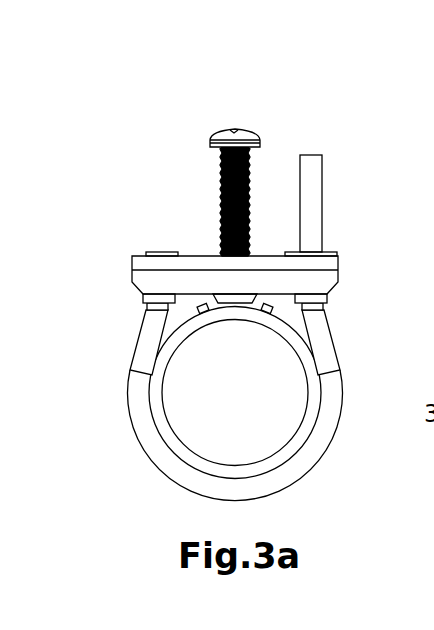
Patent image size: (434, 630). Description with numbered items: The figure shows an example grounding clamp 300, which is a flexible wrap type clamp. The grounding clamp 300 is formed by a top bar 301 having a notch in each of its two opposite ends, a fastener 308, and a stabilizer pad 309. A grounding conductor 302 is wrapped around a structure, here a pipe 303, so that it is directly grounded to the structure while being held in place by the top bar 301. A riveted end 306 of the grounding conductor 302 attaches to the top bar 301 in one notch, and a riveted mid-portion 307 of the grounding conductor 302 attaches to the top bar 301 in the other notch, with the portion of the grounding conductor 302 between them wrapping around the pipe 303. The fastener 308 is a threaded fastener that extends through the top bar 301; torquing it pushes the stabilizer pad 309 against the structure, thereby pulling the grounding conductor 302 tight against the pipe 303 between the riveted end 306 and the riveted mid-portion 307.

The grounding clamp 300 is at (291, 92).
The top bar 301 is at (200, 253).
The grounding conductor 302 is at (130, 373).
The pipe 303 is at (155, 397).
The riveted end 306 is at (138, 253).
The riveted mid-portion 307 is at (328, 250).
The fastener 308 is at (225, 130).
The stabilizer pad 309 is at (235, 305).